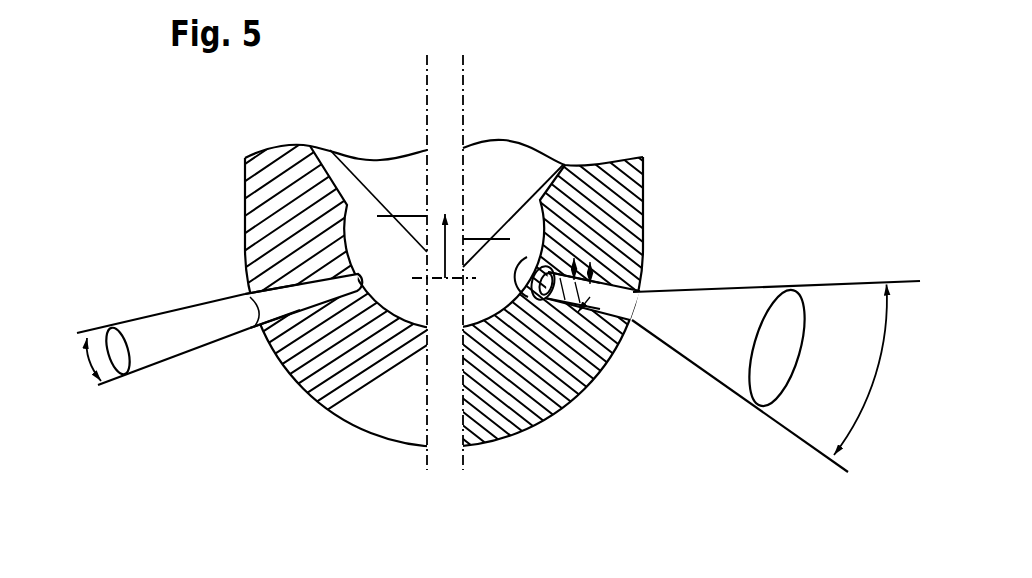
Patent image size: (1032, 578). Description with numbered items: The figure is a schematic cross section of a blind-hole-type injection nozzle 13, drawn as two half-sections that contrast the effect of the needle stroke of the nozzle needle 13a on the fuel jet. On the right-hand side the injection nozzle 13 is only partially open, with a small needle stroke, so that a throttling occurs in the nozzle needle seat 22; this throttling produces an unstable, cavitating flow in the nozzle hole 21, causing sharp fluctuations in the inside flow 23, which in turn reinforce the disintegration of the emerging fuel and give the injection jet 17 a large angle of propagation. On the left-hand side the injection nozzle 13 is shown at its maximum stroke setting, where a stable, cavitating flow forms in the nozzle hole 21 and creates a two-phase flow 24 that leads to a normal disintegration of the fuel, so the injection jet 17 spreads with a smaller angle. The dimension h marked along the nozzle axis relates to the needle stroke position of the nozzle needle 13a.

The injection nozzle 13 is at (157, 187).
The nozzle needle 13a is at (397, 168).
The injection jet 17 is at (152, 350).
The nozzle hole 21 is at (275, 308).
The nozzle needle seat 22 is at (552, 188).
The inside flow 23 is at (566, 248).
The two-phase flow 24 is at (302, 272).
The height dimension h is at (444, 231).